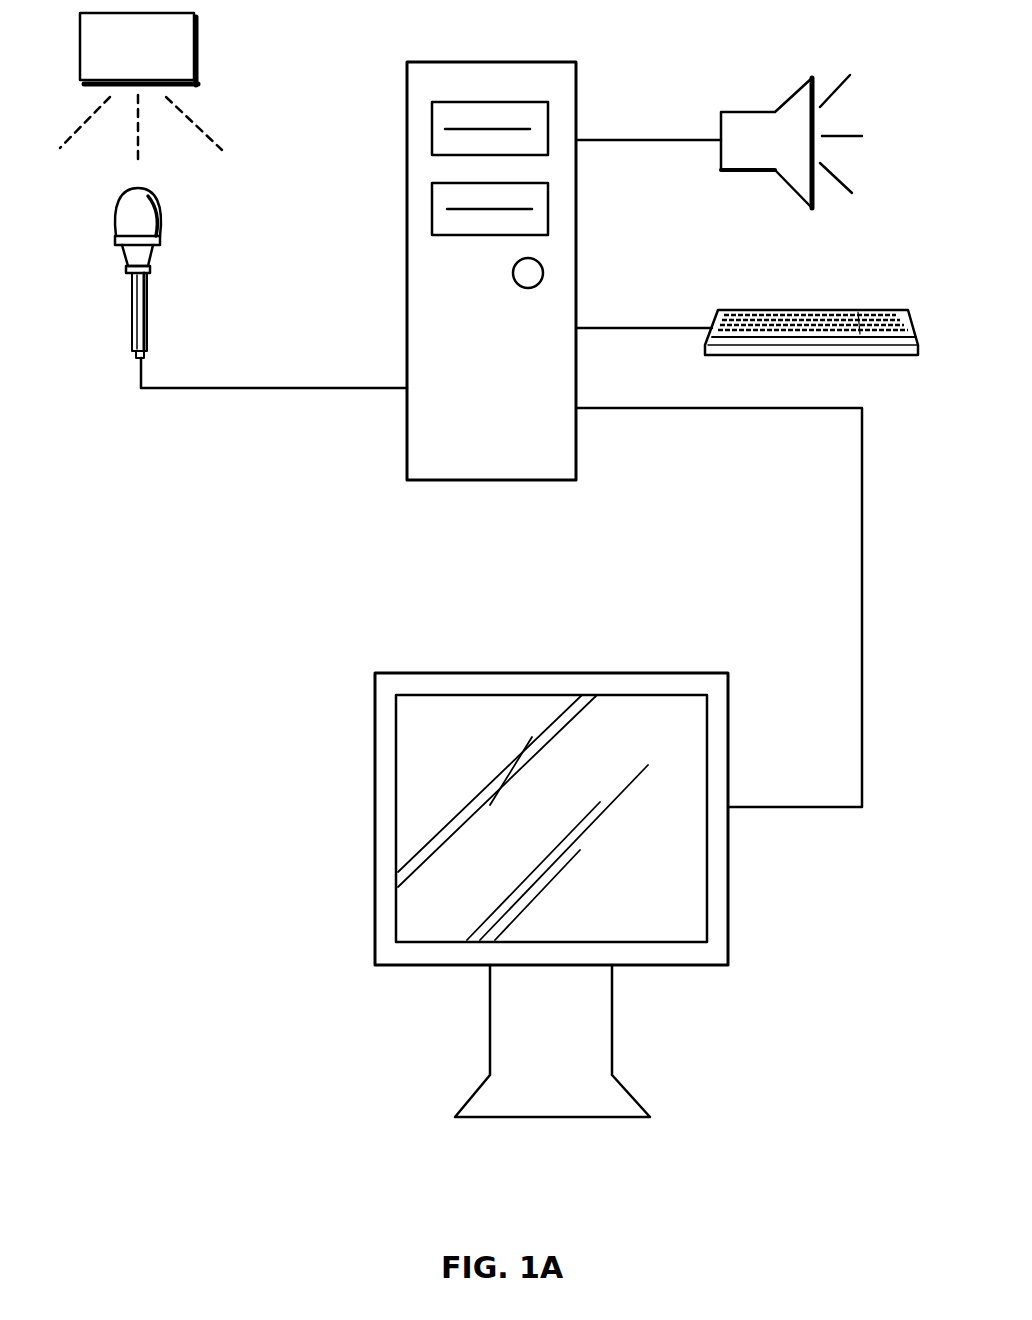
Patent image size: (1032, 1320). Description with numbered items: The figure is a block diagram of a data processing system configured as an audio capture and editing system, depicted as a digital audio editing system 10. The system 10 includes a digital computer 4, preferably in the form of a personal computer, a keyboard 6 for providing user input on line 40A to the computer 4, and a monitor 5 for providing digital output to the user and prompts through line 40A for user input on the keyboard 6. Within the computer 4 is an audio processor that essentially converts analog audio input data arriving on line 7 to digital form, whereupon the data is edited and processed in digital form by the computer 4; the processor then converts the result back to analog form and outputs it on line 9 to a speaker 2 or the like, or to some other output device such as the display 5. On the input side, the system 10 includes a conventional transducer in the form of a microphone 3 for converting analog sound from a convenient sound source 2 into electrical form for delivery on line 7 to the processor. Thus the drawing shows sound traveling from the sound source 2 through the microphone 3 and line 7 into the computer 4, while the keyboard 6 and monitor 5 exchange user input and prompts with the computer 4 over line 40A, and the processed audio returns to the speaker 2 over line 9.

The speaker / sound source 2 is at (200, 68).
The microphone 3 is at (147, 306).
The digital computer 4 is at (406, 89).
The monitor 5 is at (730, 893).
The keyboard 6 is at (800, 310).
The line 7 is at (300, 390).
The line 9 is at (608, 140).
The digital audio editing system 10 is at (248, 1058).
The line 40A is at (643, 330).